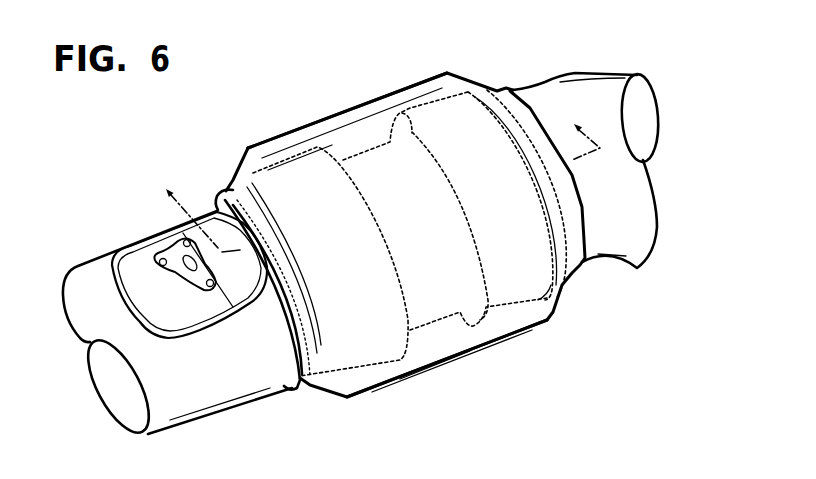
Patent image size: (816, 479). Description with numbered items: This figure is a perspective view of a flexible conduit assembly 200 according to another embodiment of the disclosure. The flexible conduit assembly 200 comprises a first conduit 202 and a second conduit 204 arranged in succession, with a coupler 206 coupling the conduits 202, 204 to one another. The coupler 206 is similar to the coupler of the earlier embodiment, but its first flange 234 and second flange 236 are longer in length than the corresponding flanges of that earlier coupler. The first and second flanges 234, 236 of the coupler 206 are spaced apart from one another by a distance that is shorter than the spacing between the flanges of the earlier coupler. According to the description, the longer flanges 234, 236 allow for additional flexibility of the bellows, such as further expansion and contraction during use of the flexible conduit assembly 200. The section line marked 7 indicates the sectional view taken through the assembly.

The flexible conduit assembly 200 is at (503, 43).
The first conduit 202 is at (585, 93).
The second conduit 204 is at (97, 278).
The coupler 206 is at (378, 97).
The first flange 234 is at (438, 92).
The second flange 236 is at (315, 167).
The section line 7- 7 is at (383, 187).